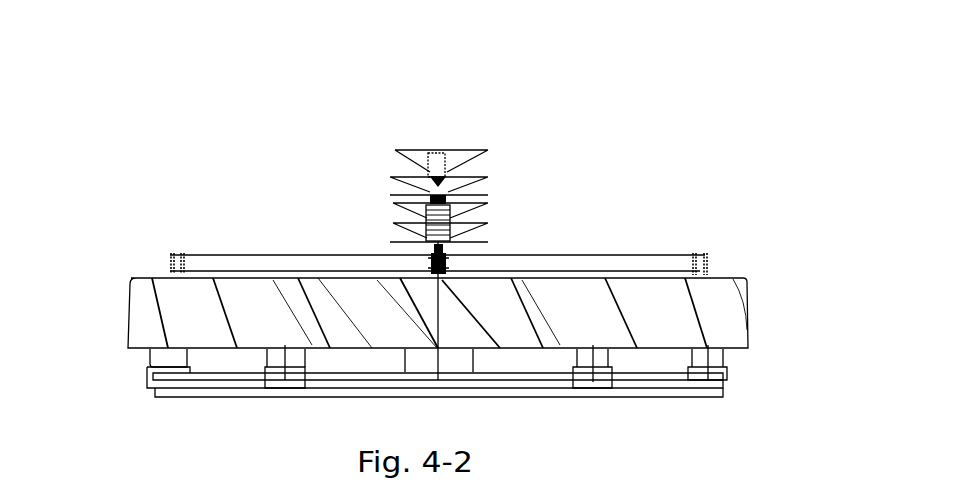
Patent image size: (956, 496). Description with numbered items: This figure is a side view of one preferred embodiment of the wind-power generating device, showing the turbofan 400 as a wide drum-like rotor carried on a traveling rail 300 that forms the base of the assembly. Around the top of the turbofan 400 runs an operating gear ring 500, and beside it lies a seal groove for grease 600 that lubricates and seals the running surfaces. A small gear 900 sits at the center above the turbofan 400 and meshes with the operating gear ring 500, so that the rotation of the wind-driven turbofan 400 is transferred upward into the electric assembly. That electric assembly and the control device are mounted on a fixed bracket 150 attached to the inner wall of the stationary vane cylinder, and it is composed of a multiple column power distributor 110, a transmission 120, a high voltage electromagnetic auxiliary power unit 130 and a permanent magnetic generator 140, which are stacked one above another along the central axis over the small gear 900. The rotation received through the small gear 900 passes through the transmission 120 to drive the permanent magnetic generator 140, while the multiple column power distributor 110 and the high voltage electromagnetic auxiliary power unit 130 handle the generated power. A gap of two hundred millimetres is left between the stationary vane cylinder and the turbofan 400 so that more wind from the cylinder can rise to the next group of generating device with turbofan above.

The multiple column power distributor 110 is at (430, 215).
The transmission 120 is at (430, 198).
The high voltage electromagnetic auxiliary power unit 130 is at (437, 180).
The permanent magnetic generator 140 is at (436, 168).
The fixed bracket 150 is at (417, 150).
The traveling rail 300 is at (712, 385).
The turbofan 400 is at (708, 320).
The operating gear ring 500 is at (708, 257).
The seal groove for grease 600 is at (707, 275).
The small gear 900 is at (433, 263).